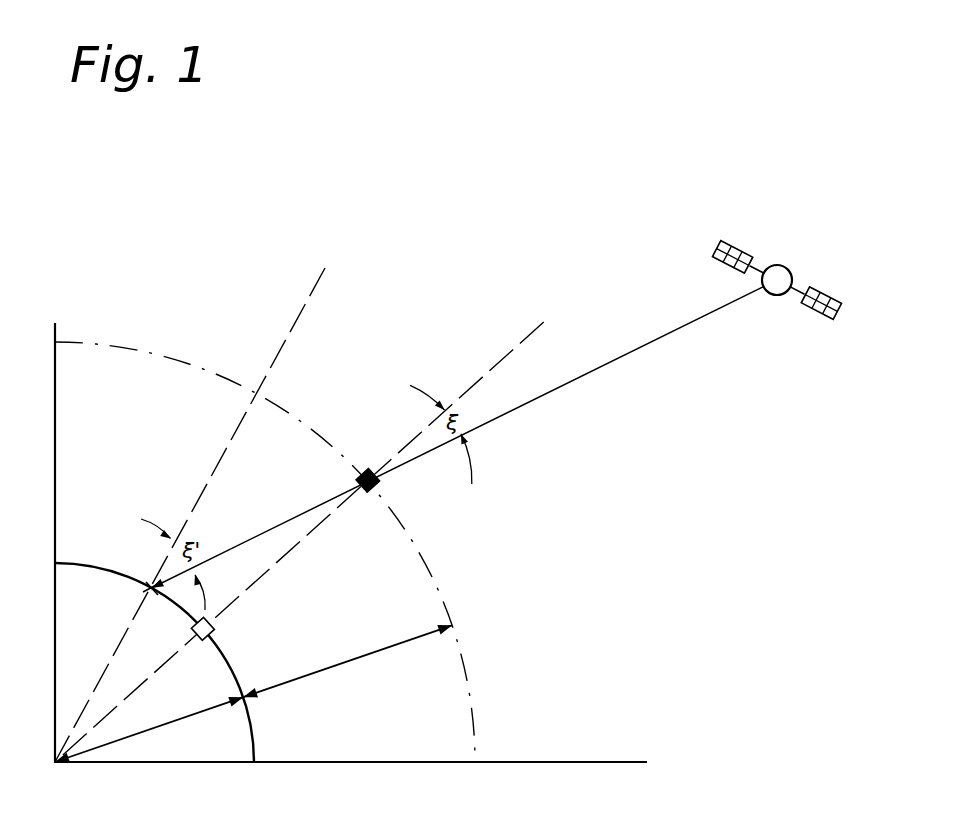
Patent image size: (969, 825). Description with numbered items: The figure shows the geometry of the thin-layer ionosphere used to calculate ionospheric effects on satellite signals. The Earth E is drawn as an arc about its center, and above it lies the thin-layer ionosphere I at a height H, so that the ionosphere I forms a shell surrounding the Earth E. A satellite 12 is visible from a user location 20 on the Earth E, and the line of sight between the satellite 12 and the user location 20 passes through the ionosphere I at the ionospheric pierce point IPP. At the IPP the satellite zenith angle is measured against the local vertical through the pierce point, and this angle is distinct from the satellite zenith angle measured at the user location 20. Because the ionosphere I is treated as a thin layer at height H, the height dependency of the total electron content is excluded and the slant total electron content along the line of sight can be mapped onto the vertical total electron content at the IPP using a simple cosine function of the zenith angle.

The satellite 12 is at (732, 251).
The user location 20 is at (150, 586).
The Earth E is at (256, 726).
The thin-layer ionosphere I is at (461, 657).
The ionospheric pierce point IPP is at (368, 500).
The height of the thin ionosphere layer H is at (253, 693).